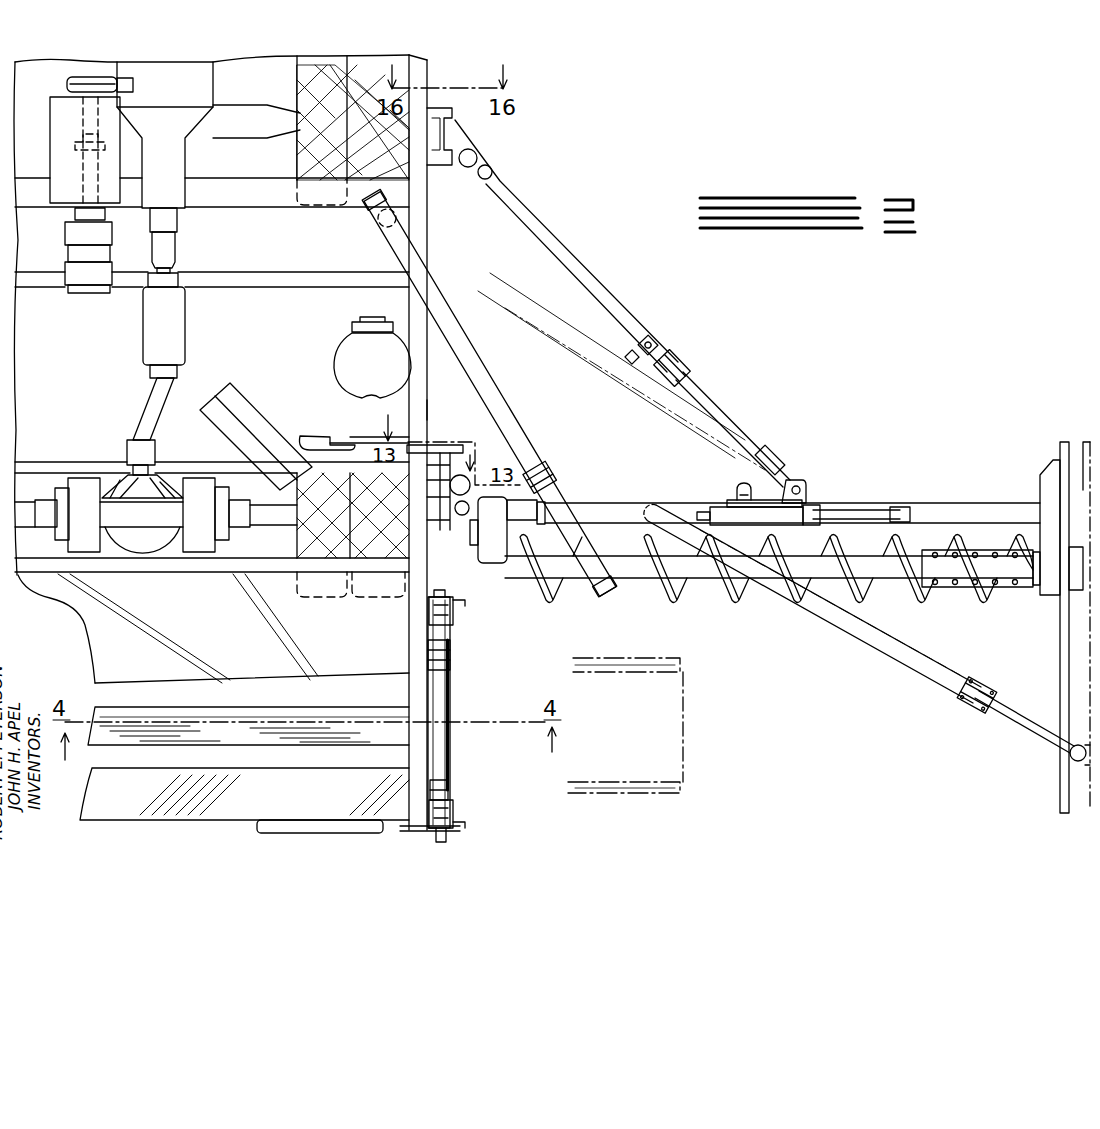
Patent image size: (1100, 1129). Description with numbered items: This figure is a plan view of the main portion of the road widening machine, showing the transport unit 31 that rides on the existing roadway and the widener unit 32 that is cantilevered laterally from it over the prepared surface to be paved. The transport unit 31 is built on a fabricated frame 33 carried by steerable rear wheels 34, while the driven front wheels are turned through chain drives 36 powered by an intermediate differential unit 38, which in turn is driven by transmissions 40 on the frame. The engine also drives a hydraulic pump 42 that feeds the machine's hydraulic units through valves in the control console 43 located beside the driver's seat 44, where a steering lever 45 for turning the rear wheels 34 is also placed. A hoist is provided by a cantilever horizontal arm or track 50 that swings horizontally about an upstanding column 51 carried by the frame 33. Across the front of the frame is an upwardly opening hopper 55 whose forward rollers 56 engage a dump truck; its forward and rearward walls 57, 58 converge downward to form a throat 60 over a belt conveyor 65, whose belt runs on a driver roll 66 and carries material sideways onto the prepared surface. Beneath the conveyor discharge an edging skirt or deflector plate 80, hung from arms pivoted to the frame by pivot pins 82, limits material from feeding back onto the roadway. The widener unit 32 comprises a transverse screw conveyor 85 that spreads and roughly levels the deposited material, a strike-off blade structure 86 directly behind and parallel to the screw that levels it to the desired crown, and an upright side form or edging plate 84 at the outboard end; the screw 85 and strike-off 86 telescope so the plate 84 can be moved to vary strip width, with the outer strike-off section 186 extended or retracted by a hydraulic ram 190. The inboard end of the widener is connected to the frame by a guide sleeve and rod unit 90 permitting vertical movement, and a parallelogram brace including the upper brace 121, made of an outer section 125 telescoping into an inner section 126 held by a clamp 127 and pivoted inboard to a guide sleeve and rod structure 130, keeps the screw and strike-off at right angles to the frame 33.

The transport unit 31 is at (434, 412).
The widener unit 32 is at (888, 505).
The frame 33 is at (427, 244).
The rear wheels 34 is at (300, 62).
The chain drives 36 is at (60, 545).
The differential unit 38 is at (128, 488).
The transmissions 40 is at (150, 341).
The hydraulic pump 42 is at (98, 282).
The control console 43 is at (220, 420).
The driver's seat 44 is at (345, 350).
The steering lever 45 is at (410, 437).
The cantilever horizontal arm or track 50 is at (505, 418).
The upstanding column 51 is at (388, 223).
The hopper 55 is at (90, 602).
The rollers 56 is at (285, 822).
The forward wall 57 is at (255, 808).
The rearward wall 58 is at (225, 625).
The throat 60 is at (145, 695).
The belt conveyor 65 is at (455, 712).
The driver roll 66 is at (455, 670).
The edging skirt or deflector plate 80 is at (455, 805).
The pivot pins 82 is at (450, 608).
The side form or edging plate 84 is at (1060, 772).
The screw conveyor 85 is at (730, 603).
The strike-off blade structure 86 is at (683, 510).
The guide sleeve and rod unit 90 is at (460, 474).
The upper brace 121 is at (637, 338).
The outer section 125 is at (740, 436).
The inner section 126 is at (590, 284).
The clamp 127 is at (690, 364).
The guide sleeve and rod structure 130 is at (499, 166).
The outer section 186 is at (965, 508).
The hydraulic ram 190 is at (801, 497).